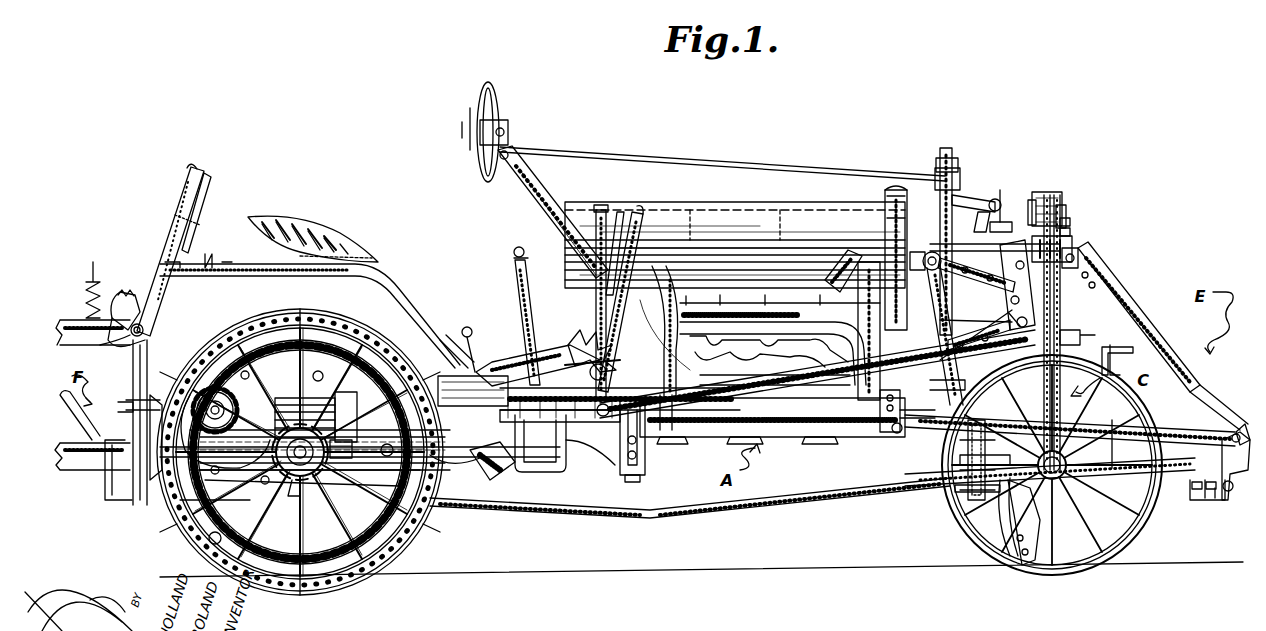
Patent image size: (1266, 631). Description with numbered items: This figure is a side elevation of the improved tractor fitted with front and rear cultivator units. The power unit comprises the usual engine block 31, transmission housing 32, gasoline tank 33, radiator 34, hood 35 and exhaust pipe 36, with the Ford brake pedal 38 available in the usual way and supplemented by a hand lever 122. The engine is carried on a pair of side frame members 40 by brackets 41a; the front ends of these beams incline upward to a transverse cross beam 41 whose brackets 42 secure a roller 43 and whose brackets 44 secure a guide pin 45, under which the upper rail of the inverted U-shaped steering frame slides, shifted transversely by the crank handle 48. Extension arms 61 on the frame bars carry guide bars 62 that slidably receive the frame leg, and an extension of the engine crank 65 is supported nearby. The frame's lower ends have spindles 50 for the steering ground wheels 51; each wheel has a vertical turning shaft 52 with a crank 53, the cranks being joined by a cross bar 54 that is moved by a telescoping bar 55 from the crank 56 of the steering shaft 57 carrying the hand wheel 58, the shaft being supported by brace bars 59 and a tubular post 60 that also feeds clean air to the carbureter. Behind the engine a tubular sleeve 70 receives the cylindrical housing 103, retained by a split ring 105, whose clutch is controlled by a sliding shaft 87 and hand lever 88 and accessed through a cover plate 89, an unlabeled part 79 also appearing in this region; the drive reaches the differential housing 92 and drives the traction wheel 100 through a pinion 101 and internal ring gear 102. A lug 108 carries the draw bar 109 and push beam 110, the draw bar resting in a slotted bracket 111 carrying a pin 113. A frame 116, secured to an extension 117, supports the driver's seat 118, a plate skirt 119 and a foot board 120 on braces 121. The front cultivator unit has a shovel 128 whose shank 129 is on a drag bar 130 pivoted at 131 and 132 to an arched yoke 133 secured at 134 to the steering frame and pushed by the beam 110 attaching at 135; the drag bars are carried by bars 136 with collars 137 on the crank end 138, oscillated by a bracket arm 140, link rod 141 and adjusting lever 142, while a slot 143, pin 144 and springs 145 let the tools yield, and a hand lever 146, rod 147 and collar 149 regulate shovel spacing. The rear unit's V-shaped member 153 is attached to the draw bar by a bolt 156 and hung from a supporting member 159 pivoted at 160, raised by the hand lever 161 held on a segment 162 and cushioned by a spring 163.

The engine block 31 is at (828, 438).
The transmission housing 32 is at (610, 470).
The gasoline tank 33 is at (724, 232).
The radiator 34 is at (866, 302).
The hood 35 is at (728, 170).
The exhaust pipe 36 is at (498, 470).
The brake pedal 38 is at (585, 345).
The side frame members 40 is at (852, 402).
The transverse cross beam 41 is at (898, 432).
The brackets 41a is at (633, 446).
The brackets 42 is at (1062, 207).
The roller 43 is at (1047, 194).
The brackets 44 is at (1068, 230).
The guide pin 45 is at (1072, 238).
The crank handle 48 is at (1078, 256).
The spindles 50 is at (1066, 453).
The ground wheels 51 is at (1140, 518).
The vertical turning shaft 52 is at (1062, 301).
The cranks 53 is at (1031, 214).
The cross bar 54 is at (997, 222).
The bar 55 is at (981, 214).
The crank 56 is at (966, 206).
The steering shaft 57 is at (880, 173).
The hand wheel 58 is at (493, 110).
The brace bars 59 is at (548, 190).
The tubular post 60 is at (946, 158).
The extension arms 61 is at (1085, 334).
The guide bars 62 is at (1080, 332).
The engine crank extension 65 is at (1140, 350).
The tubular housing or sleeve 70 is at (382, 438).
The shaft 79 is at (470, 460).
The sliding shaft 87 is at (484, 360).
The hand lever 88 is at (470, 328).
The cover plate 89 is at (450, 378).
The differential housing 92 is at (230, 342).
The traction wheel 100 is at (345, 582).
The pinion 101 is at (242, 412).
The internal ring gear 102 is at (325, 572).
The cylindrical housing 103 is at (310, 410).
The split ring 105 is at (343, 478).
The lug 108 is at (308, 478).
The draw bar 109 is at (293, 480).
The push beam 110 is at (450, 503).
The bracket 111 is at (142, 500).
The pin 113 is at (136, 406).
The frame 116 is at (143, 352).
The extension 117 is at (446, 346).
The driver's seat 118 is at (325, 246).
The plate skirt 119 is at (398, 290).
The foot board 120 is at (520, 372).
The braces 121 is at (535, 320).
The hand lever 122 is at (524, 255).
The cultivator shovel 128 is at (1033, 562).
The shanks 129 is at (1005, 518).
The drag bars 130 is at (1086, 490).
The vertical pivot 131 is at (1206, 498).
The transverse pivot 132 is at (1229, 492).
The inclined arched yoke 133 is at (1196, 400).
The securing point 134 is at (1068, 220).
The attachment point 135 is at (1234, 432).
The bars 136 is at (950, 450).
The collars 137 is at (931, 270).
The crank end 138 is at (906, 250).
The bracket arm 140 is at (992, 306).
The link rod 141 is at (730, 405).
The adjusting lever 142 is at (598, 281).
The slot 143 is at (985, 480).
The pin 144 is at (972, 510).
The springs 145 is at (976, 468).
The hand lever 146 is at (636, 214).
The rod 147 is at (782, 214).
The collar 149 is at (842, 262).
The V-shaped frame member 153 is at (70, 460).
The bolt 156 is at (126, 492).
The supporting member 159 is at (70, 318).
The pivot 160 is at (150, 330).
The hand lever 161 is at (202, 170).
The segment 162 is at (125, 290).
The spring 163 is at (93, 282).